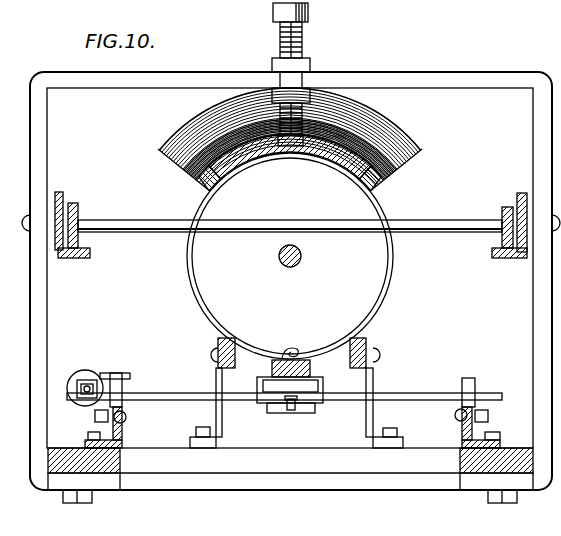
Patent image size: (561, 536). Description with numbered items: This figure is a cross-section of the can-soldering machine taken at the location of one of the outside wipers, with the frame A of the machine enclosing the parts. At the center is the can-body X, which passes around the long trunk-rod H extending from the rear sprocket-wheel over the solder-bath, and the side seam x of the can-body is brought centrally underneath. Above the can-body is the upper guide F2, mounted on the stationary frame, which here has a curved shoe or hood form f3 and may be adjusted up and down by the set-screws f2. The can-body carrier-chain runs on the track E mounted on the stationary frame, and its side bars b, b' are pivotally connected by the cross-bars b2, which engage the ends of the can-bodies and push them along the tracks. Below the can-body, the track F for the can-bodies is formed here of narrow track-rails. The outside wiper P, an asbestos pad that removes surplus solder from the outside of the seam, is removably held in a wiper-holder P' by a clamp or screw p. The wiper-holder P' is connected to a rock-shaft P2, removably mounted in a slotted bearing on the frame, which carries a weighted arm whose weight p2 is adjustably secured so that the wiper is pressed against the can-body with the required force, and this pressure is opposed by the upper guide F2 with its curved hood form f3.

The frame A is at (118, 462).
The set-screws f2 is at (303, 34).
The upper guide F2 is at (413, 143).
The curved shoe or hood form f3 is at (368, 117).
The can-body X is at (383, 311).
The trunk-rod H is at (302, 255).
The cross-bars b2 is at (452, 226).
The side bars b is at (87, 229).
The side bars b' is at (476, 239).
The track or guide for the can-body carrier E is at (503, 258).
The track or guide for the can-bodies F is at (215, 340).
The outside wiper P is at (276, 370).
The seam x is at (293, 349).
The wiper-holder P' is at (277, 406).
The clamp or screw p is at (291, 405).
The rock-shaft P2 is at (393, 397).
The weight p2 is at (88, 376).